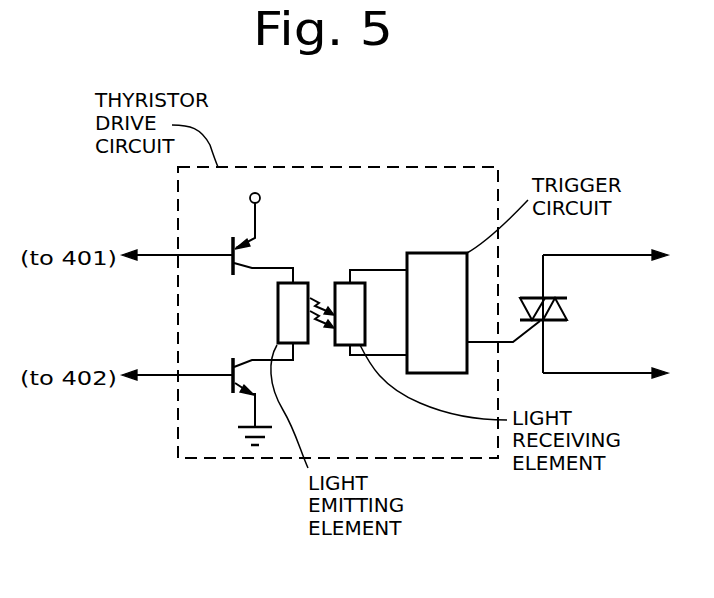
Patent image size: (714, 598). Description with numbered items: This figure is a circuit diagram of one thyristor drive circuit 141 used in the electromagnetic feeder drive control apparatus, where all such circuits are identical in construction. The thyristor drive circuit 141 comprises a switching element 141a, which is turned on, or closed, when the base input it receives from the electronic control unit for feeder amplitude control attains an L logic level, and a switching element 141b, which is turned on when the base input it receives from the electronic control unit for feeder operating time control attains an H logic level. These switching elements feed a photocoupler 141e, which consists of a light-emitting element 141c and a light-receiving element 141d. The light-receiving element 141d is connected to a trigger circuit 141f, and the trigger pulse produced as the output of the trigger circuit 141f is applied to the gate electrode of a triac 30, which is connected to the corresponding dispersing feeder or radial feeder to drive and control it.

The thyristor drive circuit 141 is at (389, 181).
The switching element 141a is at (236, 240).
The switching element 141b is at (226, 381).
The light-emitting element 141c is at (298, 345).
The light-receiving element 141d is at (343, 345).
The photocoupler 141e is at (360, 257).
The trigger circuit 141f is at (438, 265).
The triac 30 is at (532, 297).